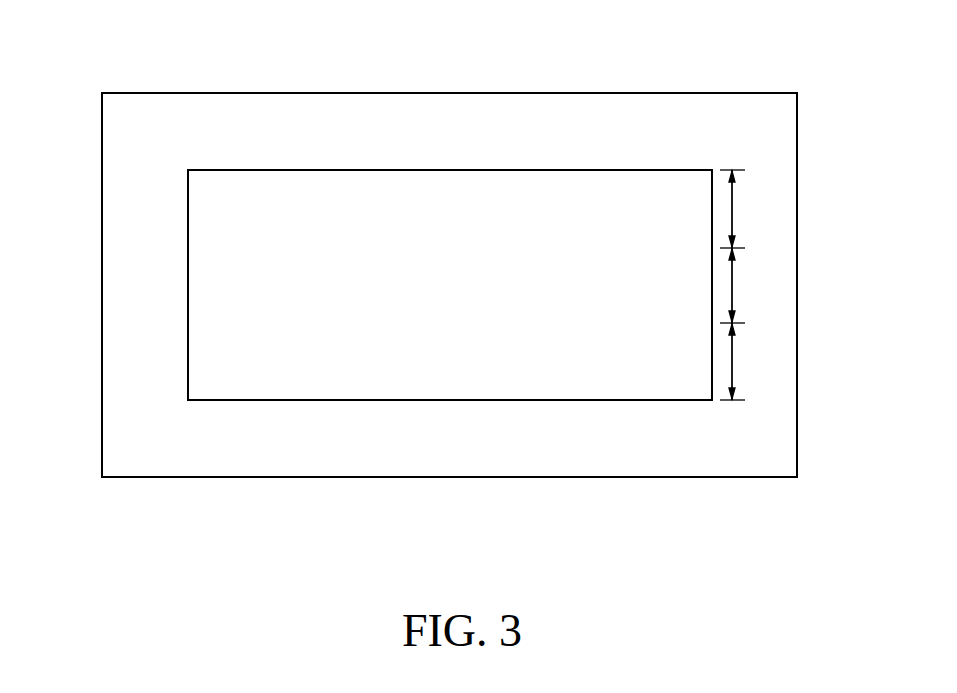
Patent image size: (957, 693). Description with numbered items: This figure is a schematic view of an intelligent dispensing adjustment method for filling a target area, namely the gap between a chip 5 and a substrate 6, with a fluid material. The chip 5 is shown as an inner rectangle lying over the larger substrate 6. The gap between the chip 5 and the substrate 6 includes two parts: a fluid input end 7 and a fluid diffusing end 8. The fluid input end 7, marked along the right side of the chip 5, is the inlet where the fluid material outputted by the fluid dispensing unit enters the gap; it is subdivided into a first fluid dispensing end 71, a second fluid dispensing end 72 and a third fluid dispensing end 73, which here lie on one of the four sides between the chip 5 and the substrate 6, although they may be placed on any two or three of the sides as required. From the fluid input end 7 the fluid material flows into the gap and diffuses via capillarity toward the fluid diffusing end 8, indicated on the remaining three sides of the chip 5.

The chip 5 is at (253, 195).
The substrate 6 is at (630, 137).
The fluid input end 7 is at (855, 188).
The 1st fluid dispensing end 71 is at (735, 206).
The 2nd fluid dispensing end 72 is at (735, 284).
The 3rd fluid dispensing end 73 is at (735, 361).
The fluid diffusing end 8 is at (432, 166).